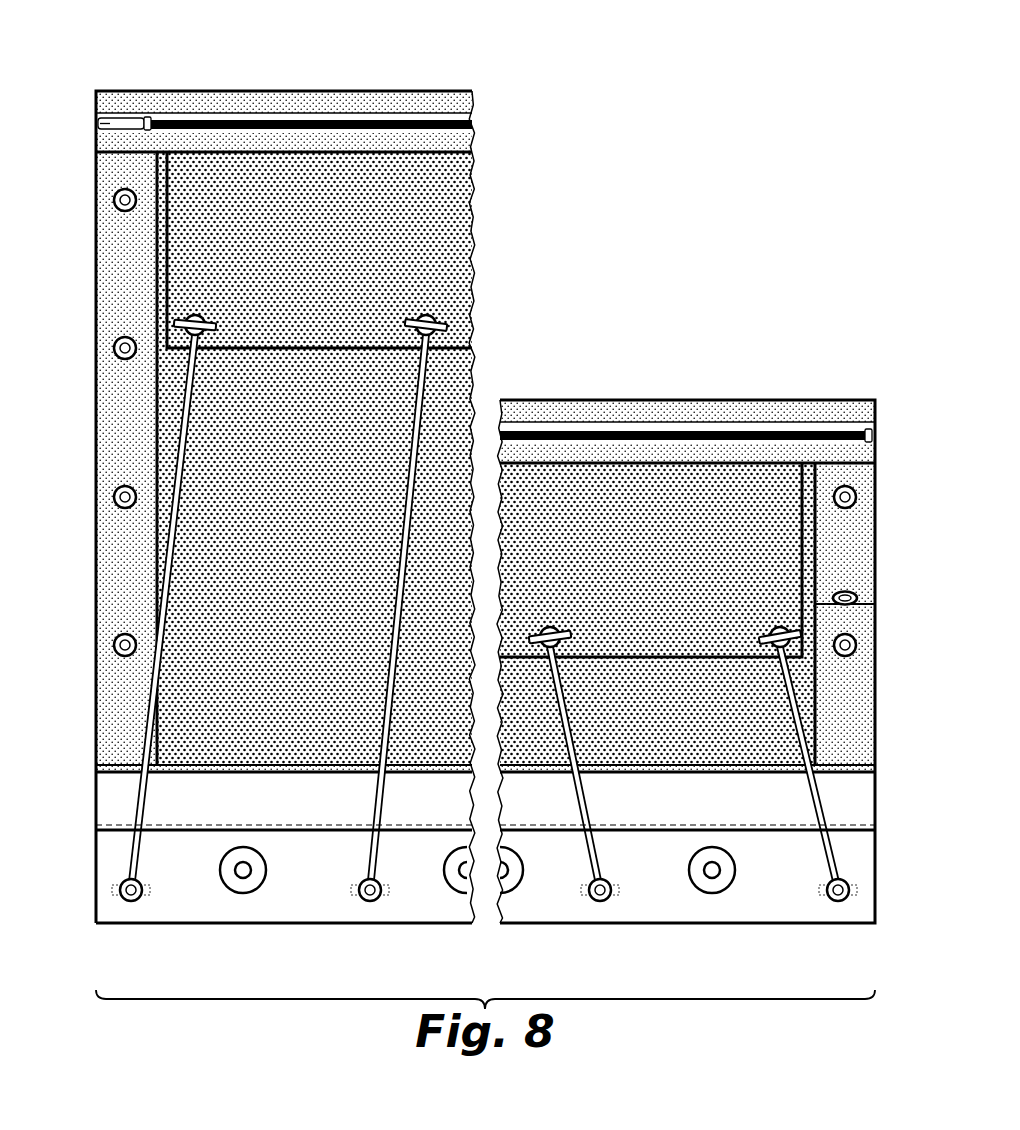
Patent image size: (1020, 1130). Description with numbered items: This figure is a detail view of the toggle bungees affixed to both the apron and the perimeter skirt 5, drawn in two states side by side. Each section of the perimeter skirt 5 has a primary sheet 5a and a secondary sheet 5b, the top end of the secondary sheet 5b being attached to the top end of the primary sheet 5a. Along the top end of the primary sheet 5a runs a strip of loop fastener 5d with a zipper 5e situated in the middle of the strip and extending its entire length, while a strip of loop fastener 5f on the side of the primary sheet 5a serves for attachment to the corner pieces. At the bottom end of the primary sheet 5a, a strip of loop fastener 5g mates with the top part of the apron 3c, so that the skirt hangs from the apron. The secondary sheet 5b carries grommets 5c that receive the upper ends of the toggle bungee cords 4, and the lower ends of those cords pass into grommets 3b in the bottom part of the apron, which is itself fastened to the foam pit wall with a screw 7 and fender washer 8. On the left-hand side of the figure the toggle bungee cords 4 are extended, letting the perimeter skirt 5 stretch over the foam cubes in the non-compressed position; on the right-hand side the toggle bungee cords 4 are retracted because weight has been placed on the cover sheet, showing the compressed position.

The grommets 3b is at (114, 203).
The top part of apron 3c is at (108, 802).
The toggle bungee cords 4 is at (180, 456).
The perimeter skirt 5 is at (172, 86).
The primary sheet 5a is at (486, 458).
The secondary sheet 5b is at (484, 404).
The grommets 5c is at (185, 318).
The loop fastener 5d is at (290, 141).
The zipper 5e is at (331, 121).
The loop fastener 5f is at (108, 572).
The loop fastener 5g is at (102, 771).
The screw 7 is at (237, 876).
The fender washer 8 is at (259, 886).